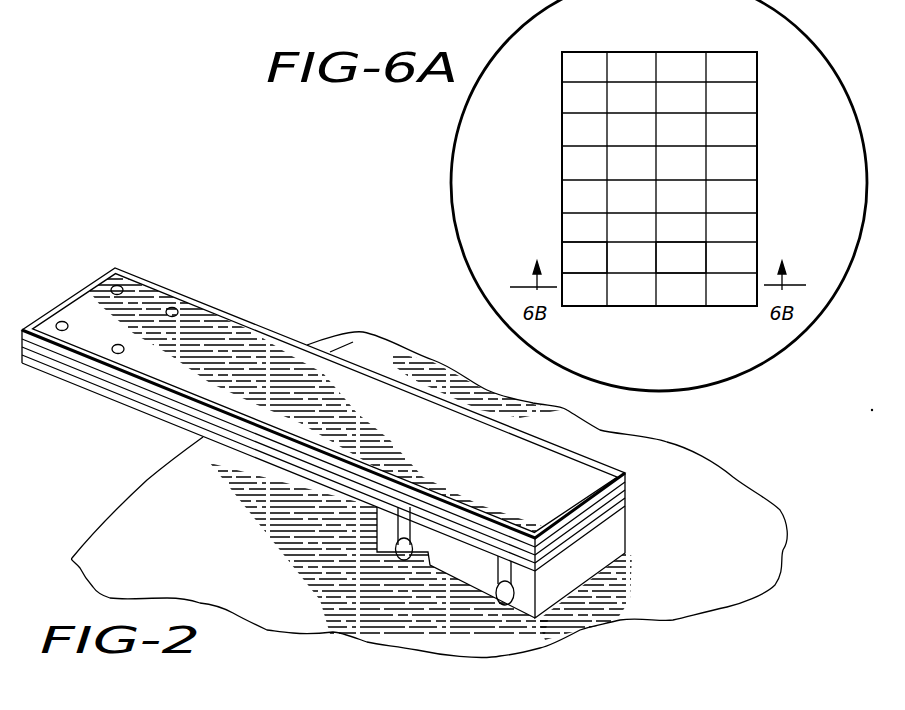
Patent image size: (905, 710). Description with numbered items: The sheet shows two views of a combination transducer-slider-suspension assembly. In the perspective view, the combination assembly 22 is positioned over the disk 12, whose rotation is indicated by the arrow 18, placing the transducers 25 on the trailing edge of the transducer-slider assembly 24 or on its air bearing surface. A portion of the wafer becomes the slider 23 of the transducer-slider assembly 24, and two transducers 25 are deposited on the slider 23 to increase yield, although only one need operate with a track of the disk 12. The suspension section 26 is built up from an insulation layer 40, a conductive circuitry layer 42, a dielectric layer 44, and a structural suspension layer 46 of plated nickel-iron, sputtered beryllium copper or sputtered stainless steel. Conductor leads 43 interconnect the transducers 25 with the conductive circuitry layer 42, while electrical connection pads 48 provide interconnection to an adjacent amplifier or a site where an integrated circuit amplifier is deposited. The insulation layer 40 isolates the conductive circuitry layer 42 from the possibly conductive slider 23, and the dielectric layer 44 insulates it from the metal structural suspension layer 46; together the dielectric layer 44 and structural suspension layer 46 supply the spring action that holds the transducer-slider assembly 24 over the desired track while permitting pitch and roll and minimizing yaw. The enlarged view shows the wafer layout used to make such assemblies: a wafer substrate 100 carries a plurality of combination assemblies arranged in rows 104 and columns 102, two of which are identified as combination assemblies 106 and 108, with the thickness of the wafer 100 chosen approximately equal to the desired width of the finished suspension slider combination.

In FIG. 6A, the wafer substrate 100 is at (798, 63).
In FIG. 6A, the columns 102 is at (720, 52).
In FIG. 6A, the rows 104 is at (563, 165).
In FIG. 6A, the combination assembly 106 is at (640, 262).
In FIG. 6A, the combination assembly 108 is at (616, 223).
In FIG. 2, the disk 12 is at (258, 589).
In FIG. 2, the arrow 18 is at (213, 487).
In FIG. 2, the combination assembly 22 is at (606, 450).
In FIG. 2, the slider 23 is at (622, 518).
In FIG. 2, the transducer-slider assembly 24 is at (606, 548).
In FIG. 2, the transducers 25 is at (394, 562).
In FIG. 2, the suspension section 26 is at (300, 374).
In FIG. 2, the insulation layer 40 is at (72, 376).
In FIG. 2, the conductive circuitry layer 42 is at (125, 394).
In FIG. 2, the conductor leads 43 is at (377, 521).
In FIG. 2, the dielectric layer 44 is at (180, 405).
In FIG. 2, the structural suspension layer 46 is at (210, 319).
In FIG. 2, the electrical connection pads 48 is at (60, 322).